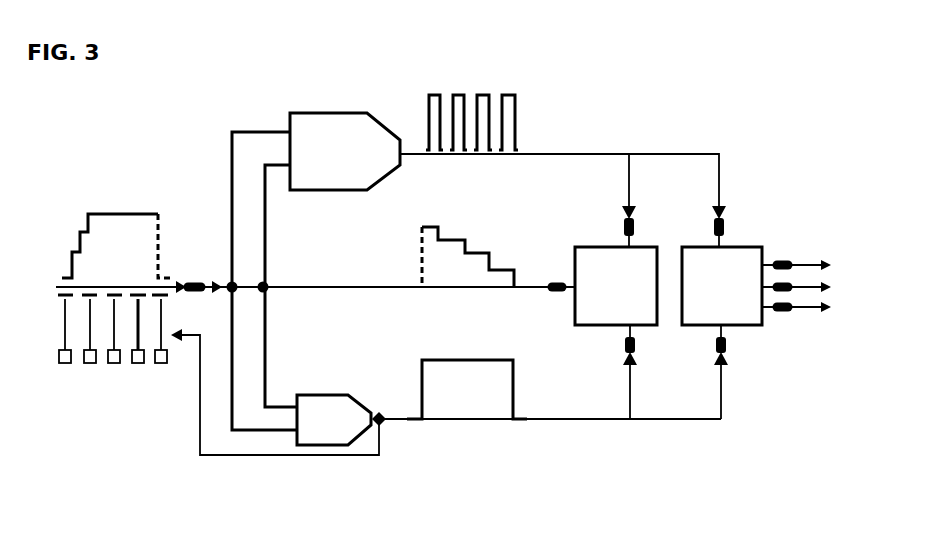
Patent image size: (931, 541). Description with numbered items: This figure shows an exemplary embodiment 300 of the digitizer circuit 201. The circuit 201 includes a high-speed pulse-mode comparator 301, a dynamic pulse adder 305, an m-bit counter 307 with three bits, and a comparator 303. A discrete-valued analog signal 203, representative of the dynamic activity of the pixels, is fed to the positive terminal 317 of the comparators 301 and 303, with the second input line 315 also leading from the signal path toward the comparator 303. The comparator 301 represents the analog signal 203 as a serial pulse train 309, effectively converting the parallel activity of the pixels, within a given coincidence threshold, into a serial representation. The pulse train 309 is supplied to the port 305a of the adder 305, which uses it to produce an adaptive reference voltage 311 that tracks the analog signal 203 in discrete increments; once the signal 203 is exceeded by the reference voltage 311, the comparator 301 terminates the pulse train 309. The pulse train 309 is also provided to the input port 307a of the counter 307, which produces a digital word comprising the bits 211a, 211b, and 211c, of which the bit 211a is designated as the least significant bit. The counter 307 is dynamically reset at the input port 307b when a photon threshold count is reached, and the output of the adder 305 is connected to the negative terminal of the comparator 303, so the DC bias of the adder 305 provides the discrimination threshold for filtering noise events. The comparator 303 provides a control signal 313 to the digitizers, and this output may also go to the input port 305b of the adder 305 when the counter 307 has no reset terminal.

The exemplary embodiment of digitizer circuit 300 is at (64, 116).
The digitizer circuit 201 is at (697, 89).
The discrete-valued analog signal 203 is at (118, 212).
The positive terminal 317 is at (229, 190).
The signal line to block 303 315 is at (268, 284).
The high-speed pulse-mode comparator 301 is at (345, 151).
The serial pulse train 309 is at (517, 96).
The adaptive reference voltage 311 is at (440, 226).
The port of adder 305a is at (622, 228).
The input port of counter 307a is at (726, 228).
The dynamic pulse adder 305 is at (616, 286).
The m-bit counter 307 is at (722, 286).
The bit of digital word 211a is at (826, 264).
The bit of digital word 211b is at (826, 287).
The bit of digital word 211c is at (825, 310).
The input port of adder 305b is at (626, 345).
The reset input port of counter 307b is at (727, 343).
The comparator 303 is at (341, 420).
The control signal 313 is at (432, 360).